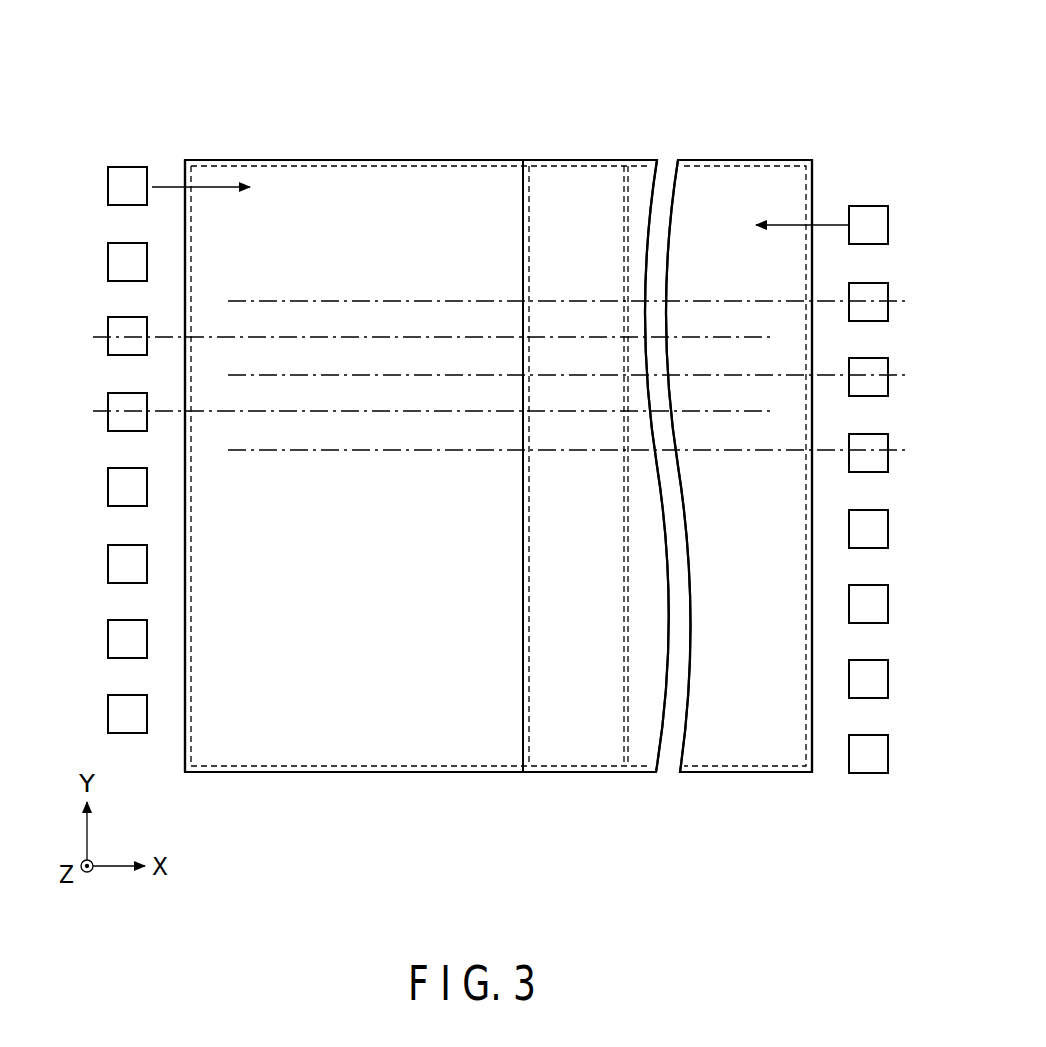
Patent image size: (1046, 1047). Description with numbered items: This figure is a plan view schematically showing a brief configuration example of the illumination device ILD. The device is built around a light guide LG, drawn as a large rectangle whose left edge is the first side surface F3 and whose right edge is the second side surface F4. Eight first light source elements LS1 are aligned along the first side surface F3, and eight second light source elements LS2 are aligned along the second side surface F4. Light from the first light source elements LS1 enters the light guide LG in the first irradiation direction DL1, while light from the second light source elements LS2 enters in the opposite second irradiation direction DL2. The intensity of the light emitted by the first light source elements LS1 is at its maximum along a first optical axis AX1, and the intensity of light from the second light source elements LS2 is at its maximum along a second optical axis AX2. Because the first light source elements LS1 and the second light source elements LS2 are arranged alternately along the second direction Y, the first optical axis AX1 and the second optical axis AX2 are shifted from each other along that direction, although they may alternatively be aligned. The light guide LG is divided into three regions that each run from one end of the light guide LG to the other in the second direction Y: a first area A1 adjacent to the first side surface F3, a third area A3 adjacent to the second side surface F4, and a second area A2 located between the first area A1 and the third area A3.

The illumination device ILD is at (238, 130).
The light guide LG is at (455, 159).
The first side surface F3 is at (182, 168).
The second side surface F4 is at (815, 180).
The first light source elements LS1 is at (108, 257).
The second light source elements LS2 is at (888, 300).
The first irradiation direction DL1 is at (223, 187).
The second irradiation direction DL2 is at (780, 223).
The first optical axis AX1 is at (215, 335).
The second optical axis AX2 is at (740, 300).
The first area A1 is at (403, 750).
The second area A2 is at (568, 745).
The third area A3 is at (742, 745).